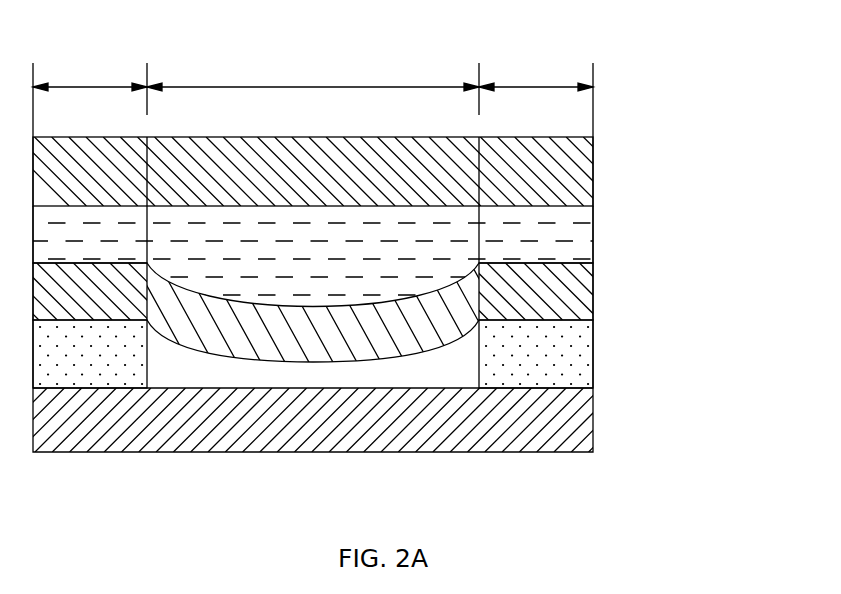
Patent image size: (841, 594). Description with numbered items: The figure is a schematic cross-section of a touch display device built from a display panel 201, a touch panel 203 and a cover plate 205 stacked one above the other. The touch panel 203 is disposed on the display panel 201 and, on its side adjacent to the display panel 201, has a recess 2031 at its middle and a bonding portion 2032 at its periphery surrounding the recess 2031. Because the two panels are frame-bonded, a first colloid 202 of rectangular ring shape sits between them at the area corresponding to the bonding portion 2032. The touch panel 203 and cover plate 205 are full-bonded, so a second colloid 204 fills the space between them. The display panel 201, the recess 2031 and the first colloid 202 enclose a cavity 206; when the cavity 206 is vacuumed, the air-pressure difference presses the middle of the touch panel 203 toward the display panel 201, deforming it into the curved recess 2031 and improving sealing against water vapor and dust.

The display panel 201 is at (558, 431).
The first colloid 202 is at (558, 361).
The touch panel 203 is at (558, 291).
The second colloid 204 is at (558, 236).
The cover plate 205 is at (558, 166).
The cavity 206 is at (333, 372).
The recess 2031 is at (313, 70).
The bonding portion 2032 is at (313, 93).